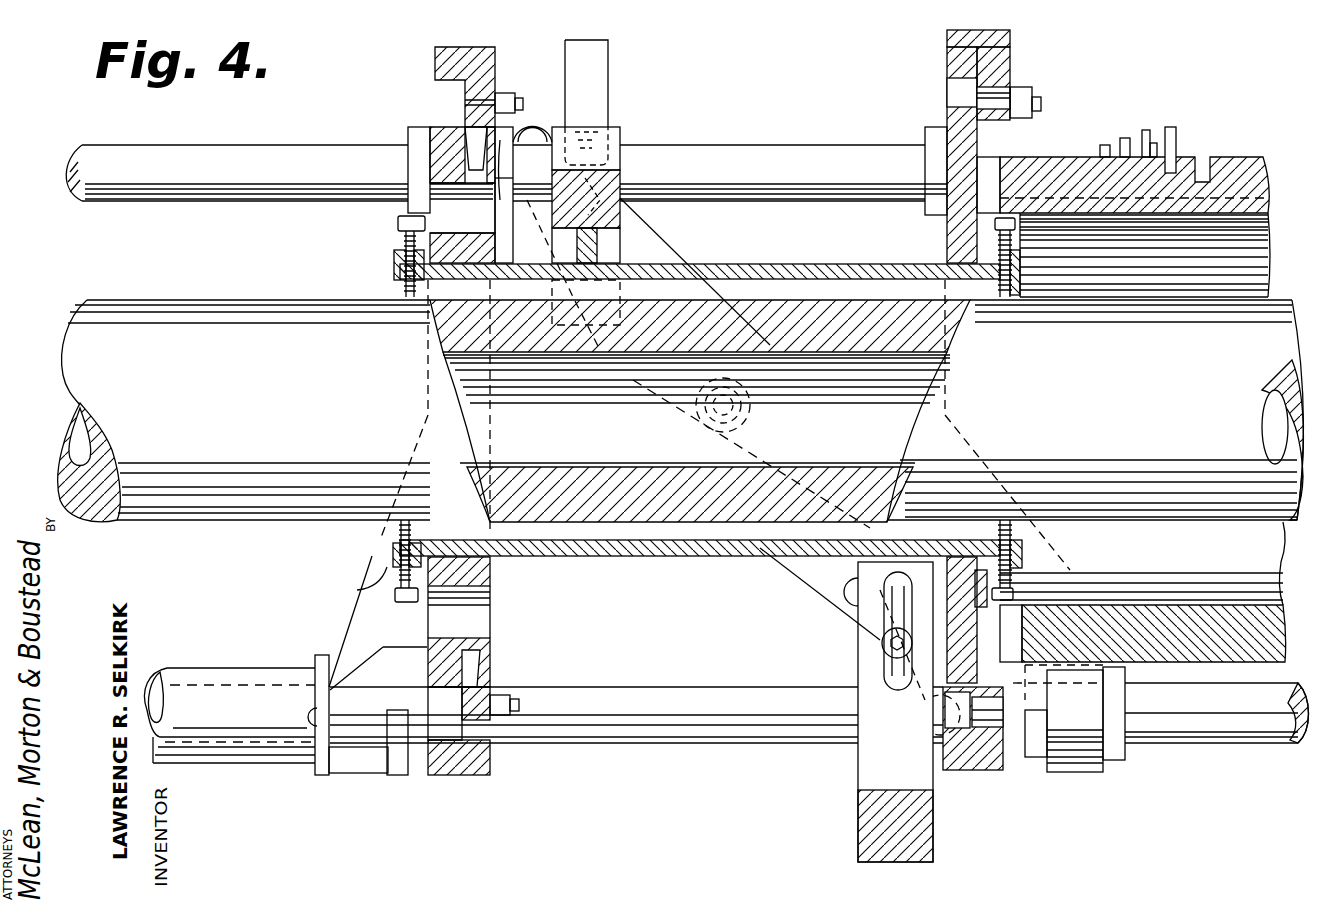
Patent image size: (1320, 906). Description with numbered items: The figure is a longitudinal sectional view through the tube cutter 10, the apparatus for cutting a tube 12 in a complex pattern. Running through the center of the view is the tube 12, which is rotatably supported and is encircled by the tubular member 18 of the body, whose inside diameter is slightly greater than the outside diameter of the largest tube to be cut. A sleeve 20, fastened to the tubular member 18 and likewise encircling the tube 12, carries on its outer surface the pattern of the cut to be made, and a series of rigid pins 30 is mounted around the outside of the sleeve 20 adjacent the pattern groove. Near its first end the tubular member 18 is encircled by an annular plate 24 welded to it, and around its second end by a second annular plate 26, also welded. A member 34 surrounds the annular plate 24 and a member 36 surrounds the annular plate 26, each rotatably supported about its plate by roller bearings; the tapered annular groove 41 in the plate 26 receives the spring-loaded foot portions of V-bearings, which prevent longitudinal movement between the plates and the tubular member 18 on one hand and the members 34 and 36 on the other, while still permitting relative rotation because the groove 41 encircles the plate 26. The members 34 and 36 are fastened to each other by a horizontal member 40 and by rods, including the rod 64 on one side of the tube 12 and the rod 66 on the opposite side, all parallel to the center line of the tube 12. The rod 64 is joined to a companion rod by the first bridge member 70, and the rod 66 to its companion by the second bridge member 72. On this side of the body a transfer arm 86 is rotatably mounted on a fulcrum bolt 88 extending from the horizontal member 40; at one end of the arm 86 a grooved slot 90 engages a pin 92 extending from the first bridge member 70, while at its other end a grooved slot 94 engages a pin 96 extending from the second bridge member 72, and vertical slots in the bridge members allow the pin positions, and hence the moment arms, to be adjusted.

The tube cutter 10 is at (1080, 92).
The tube 12 is at (246, 378).
The tubular member 18 is at (772, 270).
The sleeve 20 is at (1192, 148).
The annular plate 24 is at (958, 147).
The annular plate 26 is at (437, 142).
The rigid pins 30 is at (1147, 130).
The member 34 is at (993, 68).
The member 36 is at (488, 70).
The horizontal member 40 is at (842, 442).
The tapered annular groove 41 is at (473, 148).
The rod 64 is at (762, 145).
The rod 66 is at (700, 748).
The first bridge member 70 is at (620, 135).
The second bridge member 72 is at (880, 777).
The transfer arm 86 is at (790, 585).
The fulcrum bolt 88 is at (739, 410).
The grooved slot 90 is at (640, 250).
The pin 92 is at (620, 213).
The grooved slot 94 is at (850, 586).
The pin 96 is at (882, 644).